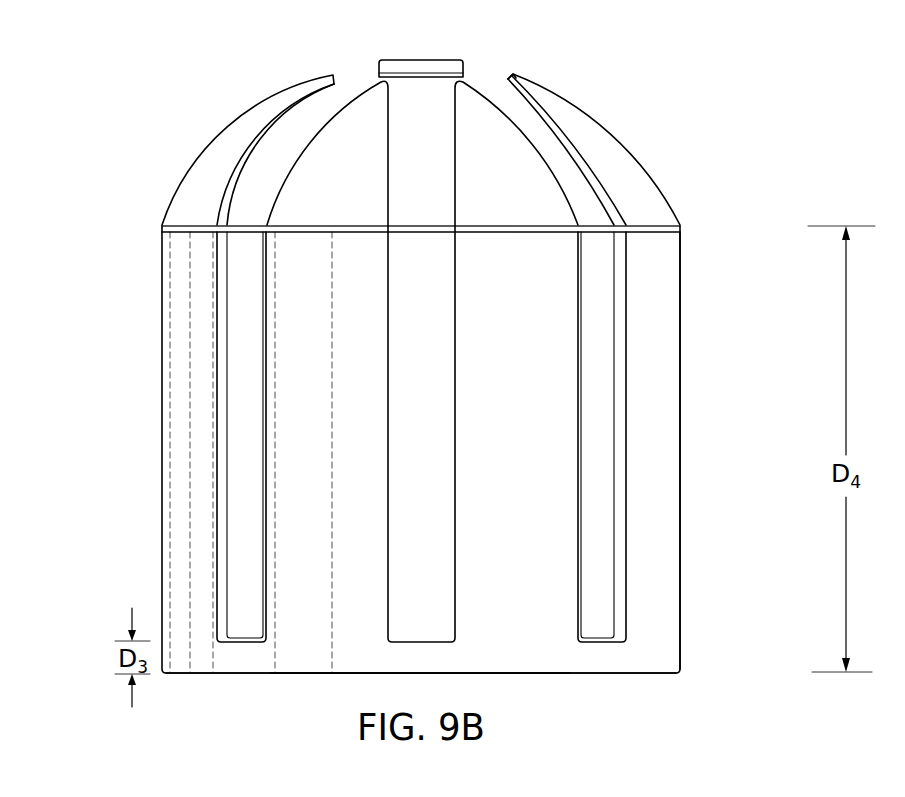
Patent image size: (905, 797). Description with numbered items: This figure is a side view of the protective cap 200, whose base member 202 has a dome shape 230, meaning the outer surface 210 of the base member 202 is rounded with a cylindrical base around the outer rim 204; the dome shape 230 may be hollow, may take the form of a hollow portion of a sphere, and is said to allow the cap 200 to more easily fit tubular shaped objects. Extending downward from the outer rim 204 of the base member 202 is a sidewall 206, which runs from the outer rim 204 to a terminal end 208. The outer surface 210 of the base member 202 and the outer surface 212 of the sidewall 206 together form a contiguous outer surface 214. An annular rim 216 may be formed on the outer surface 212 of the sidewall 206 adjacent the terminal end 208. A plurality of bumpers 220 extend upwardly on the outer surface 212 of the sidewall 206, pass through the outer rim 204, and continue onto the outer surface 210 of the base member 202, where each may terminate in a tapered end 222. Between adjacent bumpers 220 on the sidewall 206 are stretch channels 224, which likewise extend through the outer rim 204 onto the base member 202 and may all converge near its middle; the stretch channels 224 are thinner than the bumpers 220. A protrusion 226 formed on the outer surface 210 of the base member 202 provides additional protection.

The protective cap 200 is at (127, 99).
The base member 202 is at (570, 93).
The outer rim 204 is at (681, 228).
The sidewall 206 is at (690, 490).
The terminal end 208 is at (604, 676).
The outer surface of base member 210 is at (566, 173).
The outer surface of sidewall 212 is at (598, 556).
The contiguous outer surface 214 is at (663, 290).
The annular rim 216 is at (435, 658).
The bumpers 220 is at (180, 312).
The tapered end 222 is at (521, 80).
The stretch channels 224 is at (243, 406).
The protrusion 226 is at (466, 75).
The dome shape 230 is at (278, 165).